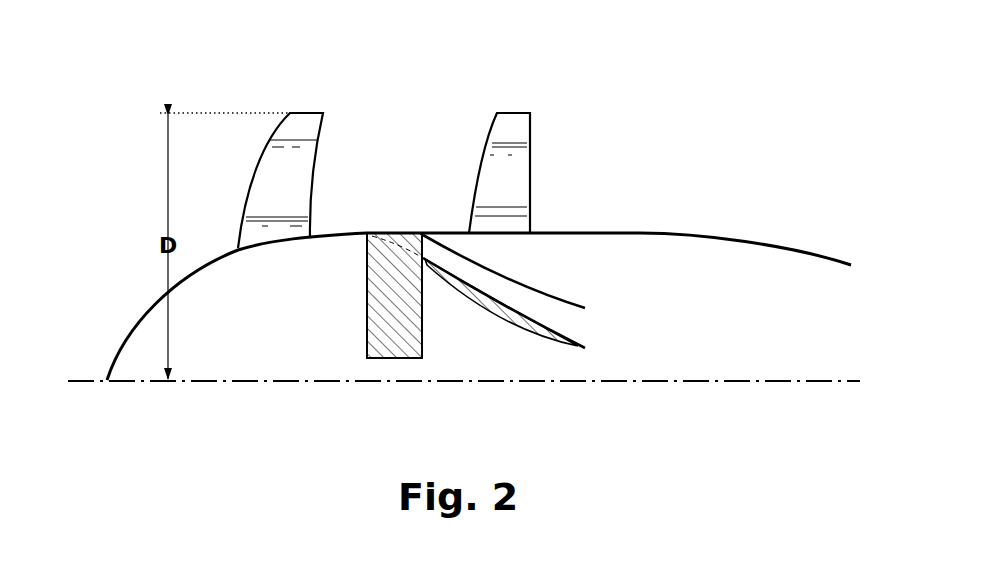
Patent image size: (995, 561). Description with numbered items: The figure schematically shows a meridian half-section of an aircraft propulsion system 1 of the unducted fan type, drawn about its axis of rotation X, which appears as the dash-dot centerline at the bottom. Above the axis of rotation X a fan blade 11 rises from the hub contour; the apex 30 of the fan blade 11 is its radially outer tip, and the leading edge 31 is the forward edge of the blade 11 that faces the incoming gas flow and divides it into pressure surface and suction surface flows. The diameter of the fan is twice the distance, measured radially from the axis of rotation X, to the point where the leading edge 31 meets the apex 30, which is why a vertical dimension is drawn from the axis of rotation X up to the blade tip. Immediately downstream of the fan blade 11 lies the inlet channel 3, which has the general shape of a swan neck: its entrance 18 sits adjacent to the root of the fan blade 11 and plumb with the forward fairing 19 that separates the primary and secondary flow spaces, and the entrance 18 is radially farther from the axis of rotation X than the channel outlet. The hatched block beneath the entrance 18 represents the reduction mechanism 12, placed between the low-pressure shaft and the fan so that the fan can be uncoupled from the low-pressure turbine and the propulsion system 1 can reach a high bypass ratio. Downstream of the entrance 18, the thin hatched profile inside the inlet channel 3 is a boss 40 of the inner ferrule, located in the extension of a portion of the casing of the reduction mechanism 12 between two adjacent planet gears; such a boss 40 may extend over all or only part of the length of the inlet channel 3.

The propulsion system 1 is at (116, 210).
The fan blade 11 is at (265, 198).
The reduction mechanism 12 is at (392, 360).
The entrance 18 is at (410, 229).
The forward fairing 19 is at (450, 243).
The inlet channel 3 is at (504, 303).
The apex 30 is at (301, 113).
The leading edge 31 is at (262, 147).
The boss 40 is at (521, 348).
The axis of rotation X is at (75, 384).